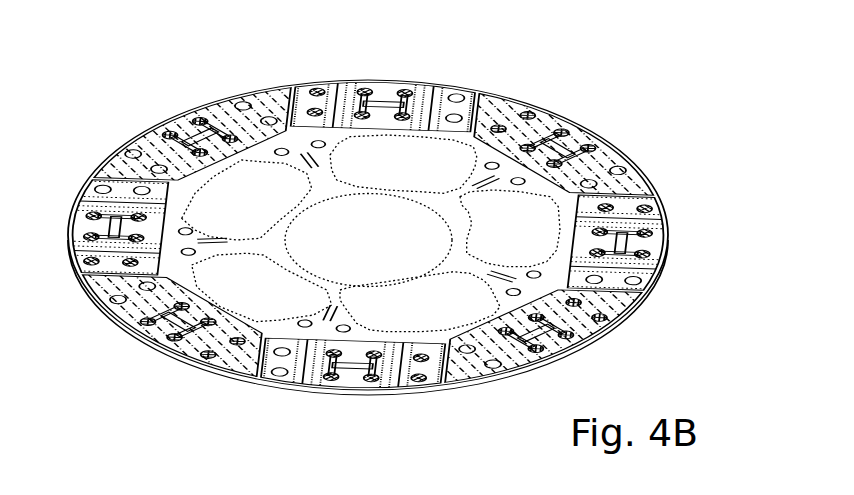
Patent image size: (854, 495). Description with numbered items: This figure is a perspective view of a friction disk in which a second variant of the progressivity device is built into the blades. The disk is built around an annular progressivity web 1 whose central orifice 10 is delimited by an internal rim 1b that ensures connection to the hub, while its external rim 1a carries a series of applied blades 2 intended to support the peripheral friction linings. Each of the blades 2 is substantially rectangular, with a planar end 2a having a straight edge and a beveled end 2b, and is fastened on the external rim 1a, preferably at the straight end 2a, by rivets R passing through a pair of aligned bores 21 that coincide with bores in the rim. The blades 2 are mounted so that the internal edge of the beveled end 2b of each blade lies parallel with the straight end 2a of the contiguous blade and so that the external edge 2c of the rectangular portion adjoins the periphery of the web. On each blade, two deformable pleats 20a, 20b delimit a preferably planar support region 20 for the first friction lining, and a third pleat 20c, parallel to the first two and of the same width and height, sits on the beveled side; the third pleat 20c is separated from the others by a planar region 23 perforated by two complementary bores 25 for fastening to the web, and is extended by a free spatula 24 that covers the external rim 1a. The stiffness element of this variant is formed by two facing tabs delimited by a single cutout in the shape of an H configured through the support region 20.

The annular progressivity web 1 is at (622, 141).
The external rim 1a is at (662, 244).
The internal rim 1b is at (462, 249).
The central orifice 10 is at (386, 247).
The applied blades 2 is at (548, 116).
The planar end with straight edge 2a is at (476, 97).
The beveled end 2b is at (256, 100).
The external edge 2c is at (73, 225).
The H-shaped cutout H is at (392, 97).
The aligned bores 21 is at (463, 95).
The planar region 23 is at (124, 160).
The spatula 24 is at (245, 372).
The aligned orifices 25 is at (140, 153).
The rivets R is at (172, 130).
The support region 20 is at (150, 330).
The first pleat 20a is at (291, 368).
The second pleat 20b is at (375, 365).
The third pleat 20c is at (445, 365).